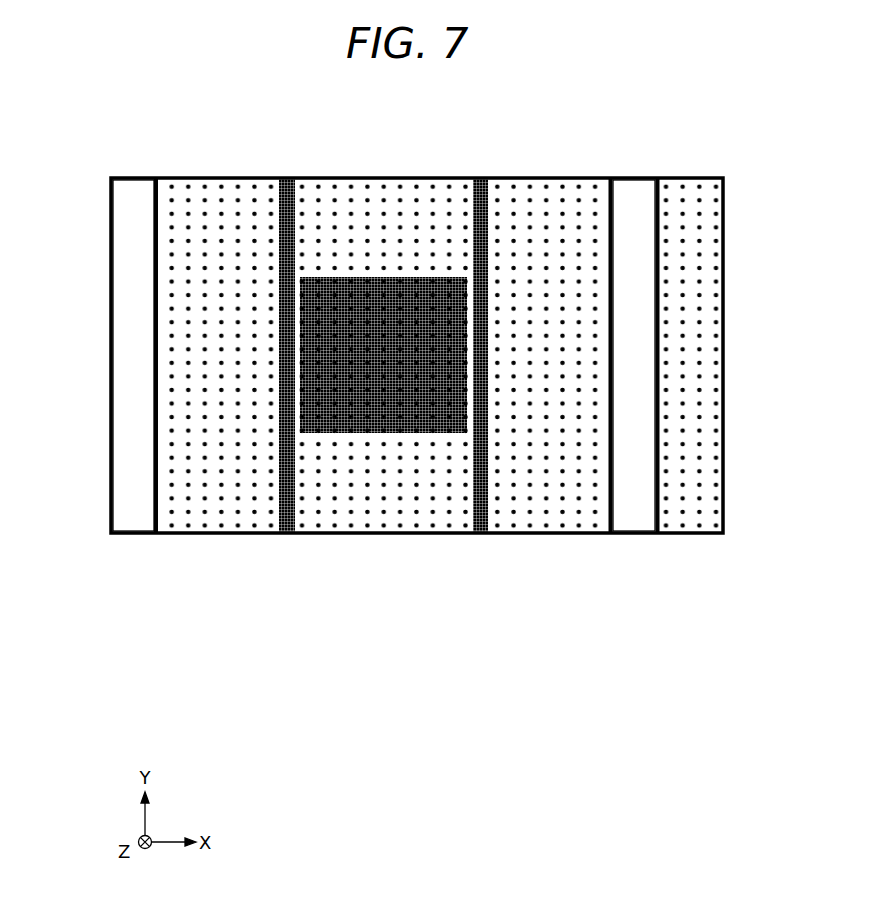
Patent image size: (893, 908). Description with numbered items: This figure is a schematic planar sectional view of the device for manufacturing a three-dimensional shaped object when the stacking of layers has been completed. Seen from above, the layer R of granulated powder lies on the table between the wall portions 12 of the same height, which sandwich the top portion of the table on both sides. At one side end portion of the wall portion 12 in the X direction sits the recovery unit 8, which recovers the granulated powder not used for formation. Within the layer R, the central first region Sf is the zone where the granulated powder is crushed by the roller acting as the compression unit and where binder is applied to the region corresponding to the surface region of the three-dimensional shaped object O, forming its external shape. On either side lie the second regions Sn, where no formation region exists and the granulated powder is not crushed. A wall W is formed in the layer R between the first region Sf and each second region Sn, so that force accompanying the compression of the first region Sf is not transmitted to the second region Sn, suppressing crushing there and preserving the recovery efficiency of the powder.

The recovery unit 8 is at (412, 403).
The wall portion 12 is at (111, 323).
The layer R is at (218, 519).
The wall W is at (284, 532).
The three-dimensional shaped object O is at (402, 424).
The second region Sn is at (157, 143).
The first region Sf is at (383, 89).